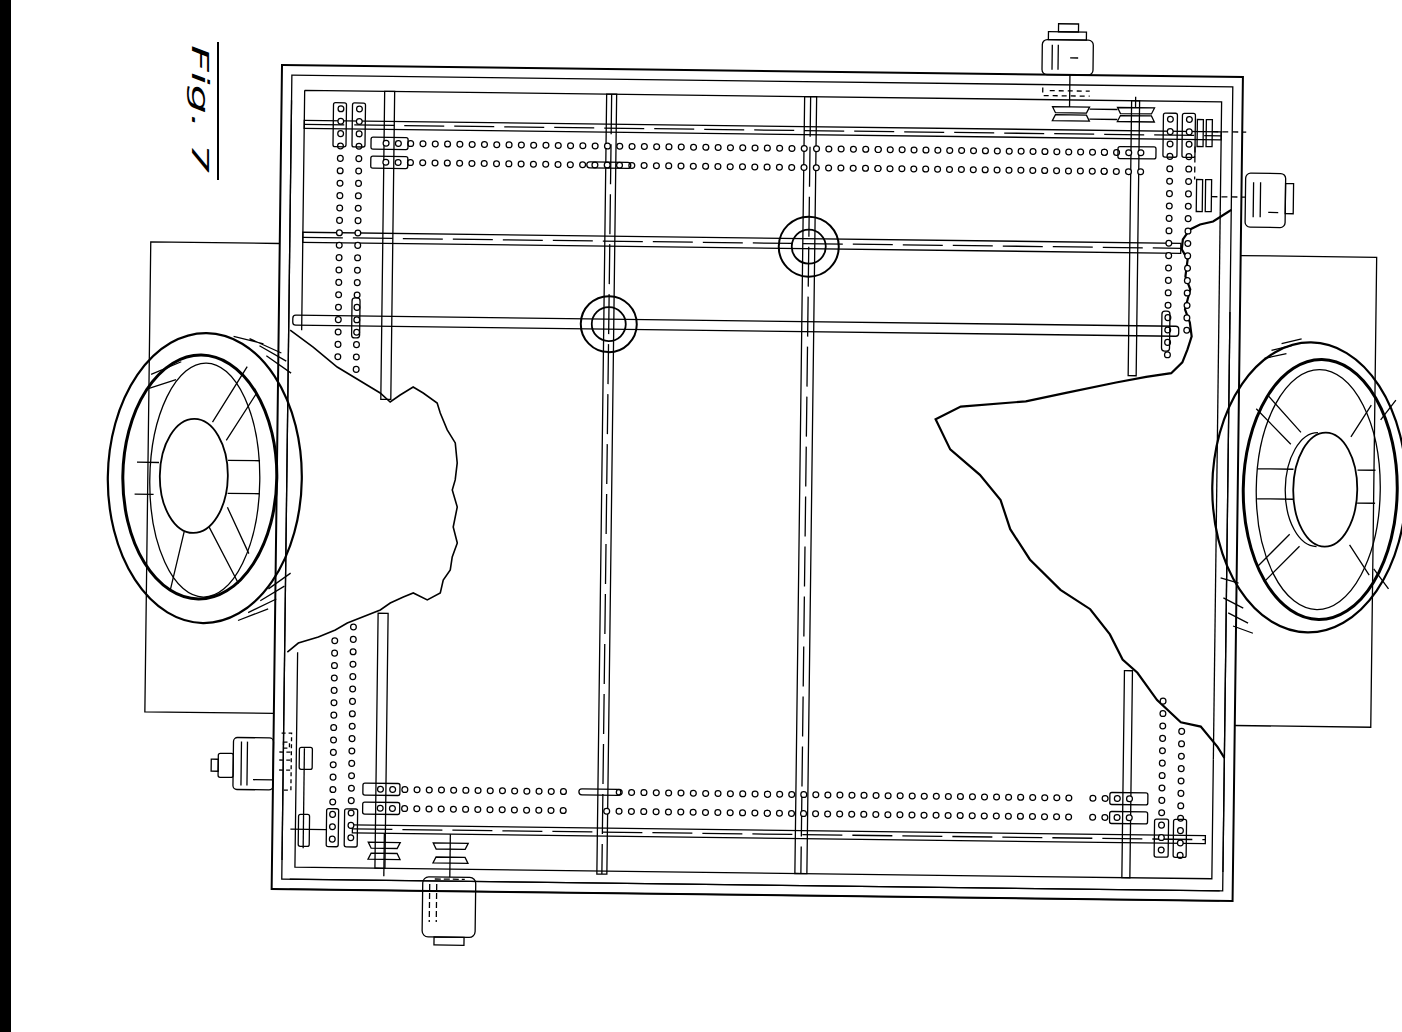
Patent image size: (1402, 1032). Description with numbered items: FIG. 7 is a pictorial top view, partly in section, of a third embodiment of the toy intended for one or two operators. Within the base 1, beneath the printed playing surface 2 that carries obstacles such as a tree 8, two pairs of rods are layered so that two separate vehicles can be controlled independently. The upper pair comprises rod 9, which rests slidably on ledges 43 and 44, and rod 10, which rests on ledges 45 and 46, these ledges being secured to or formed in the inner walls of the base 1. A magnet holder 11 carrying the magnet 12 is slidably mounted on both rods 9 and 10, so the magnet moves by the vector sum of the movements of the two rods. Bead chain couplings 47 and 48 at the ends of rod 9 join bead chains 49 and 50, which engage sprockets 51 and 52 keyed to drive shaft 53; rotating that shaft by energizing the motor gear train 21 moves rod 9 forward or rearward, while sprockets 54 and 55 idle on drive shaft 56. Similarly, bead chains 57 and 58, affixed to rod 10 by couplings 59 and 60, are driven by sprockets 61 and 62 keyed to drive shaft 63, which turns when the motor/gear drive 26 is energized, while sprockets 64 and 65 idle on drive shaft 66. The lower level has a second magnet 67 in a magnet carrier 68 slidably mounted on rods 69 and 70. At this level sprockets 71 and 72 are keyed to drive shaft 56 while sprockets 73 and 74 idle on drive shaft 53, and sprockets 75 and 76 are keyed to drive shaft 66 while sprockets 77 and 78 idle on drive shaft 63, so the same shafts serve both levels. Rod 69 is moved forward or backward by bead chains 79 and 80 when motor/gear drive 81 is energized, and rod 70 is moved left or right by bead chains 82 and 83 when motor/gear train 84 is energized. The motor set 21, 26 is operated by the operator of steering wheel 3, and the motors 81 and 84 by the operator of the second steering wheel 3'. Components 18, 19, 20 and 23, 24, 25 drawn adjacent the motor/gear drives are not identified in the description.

The base 1 is at (690, 893).
The printed playing surface 2 is at (462, 555).
The steering wheel 3 is at (188, 477).
The steering wheel 3' is at (1306, 514).
The tree 8 is at (62, 472).
The rod 9 is at (618, 512).
The rod 10 is at (690, 326).
The magnet holder 11 is at (620, 332).
The magnet 12 is at (598, 338).
The pulley 18 is at (394, 862).
The pulley 19 is at (470, 853).
The pulley 20 is at (478, 845).
The motor gear train 21 is at (486, 905).
The pulley 23 is at (313, 848).
The belt 24 is at (300, 760).
The pulley 25 is at (318, 745).
The motor/gear drive 26 is at (252, 785).
The ledge 43 is at (650, 78).
The ledge 44 is at (645, 882).
The ledge 45 is at (1227, 793).
The ledge 46 is at (294, 195).
The bead chain coupling 47 is at (625, 166).
The bead chain coupling 48 is at (615, 782).
The bead chain 49 is at (862, 170).
The bead chain 50 is at (908, 785).
The bead-chain sprocket 51 is at (395, 170).
The bead-chain sprocket 52 is at (398, 780).
The drive shaft 53 is at (396, 667).
The sprocket 54 is at (1134, 175).
The sprocket 55 is at (1113, 785).
The drive shaft 56 is at (1130, 688).
The bead chain 57 is at (352, 745).
The bead chain 58 is at (1172, 762).
The coupling 59 is at (364, 312).
The coupling 60 is at (1167, 318).
The sprocket 61 is at (1171, 848).
The sprocket 62 is at (360, 848).
The drive shaft 63 is at (875, 832).
The sprocket 64 is at (1171, 100).
The sprocket 65 is at (360, 100).
The drive shaft 66 is at (485, 125).
The second magnet 67 is at (818, 248).
The magnet carrier 68 is at (790, 262).
The rod 69 is at (818, 578).
The rod 70 is at (940, 245).
The sprocket 71 is at (1112, 812).
The sprocket 72 is at (1122, 150).
The sprocket 73 is at (395, 150).
The sprocket 74 is at (400, 805).
The sprocket 75 is at (1190, 100).
The sprocket 76 is at (341, 100).
The sprocket 77 is at (1190, 848).
The sprocket 78 is at (342, 848).
The bead chain 79 is at (968, 156).
The bead chain 80 is at (985, 800).
The motor/gear drive 81 is at (1090, 55).
The bead chain 82 is at (1216, 745).
The bead chain 83 is at (338, 288).
The motor/gear train 84 is at (1270, 180).